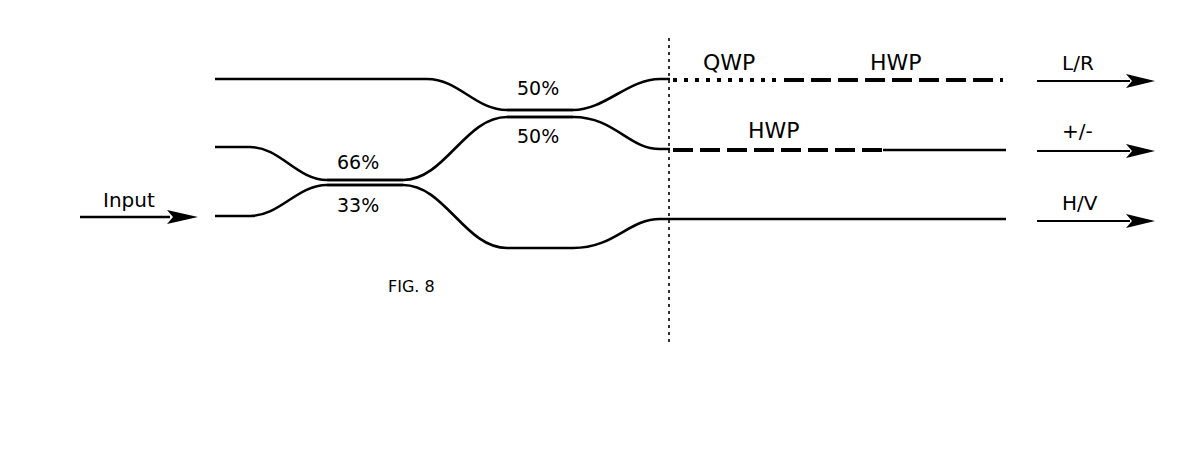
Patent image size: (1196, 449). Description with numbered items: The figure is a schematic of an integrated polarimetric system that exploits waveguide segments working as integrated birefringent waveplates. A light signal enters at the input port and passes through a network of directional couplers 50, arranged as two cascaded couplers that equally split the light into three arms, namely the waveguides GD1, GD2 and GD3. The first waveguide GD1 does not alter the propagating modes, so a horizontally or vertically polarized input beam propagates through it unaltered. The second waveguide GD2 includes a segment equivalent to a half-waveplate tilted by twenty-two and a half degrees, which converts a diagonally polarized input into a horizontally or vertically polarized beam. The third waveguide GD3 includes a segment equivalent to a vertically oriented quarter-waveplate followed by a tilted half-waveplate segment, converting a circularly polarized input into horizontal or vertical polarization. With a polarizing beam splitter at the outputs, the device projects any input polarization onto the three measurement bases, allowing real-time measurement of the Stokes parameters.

The directional couplers 50 is at (323, 211).
The first waveguide GD1 is at (227, 219).
The second waveguide GD2 is at (221, 146).
The third waveguide GD3 is at (231, 77).